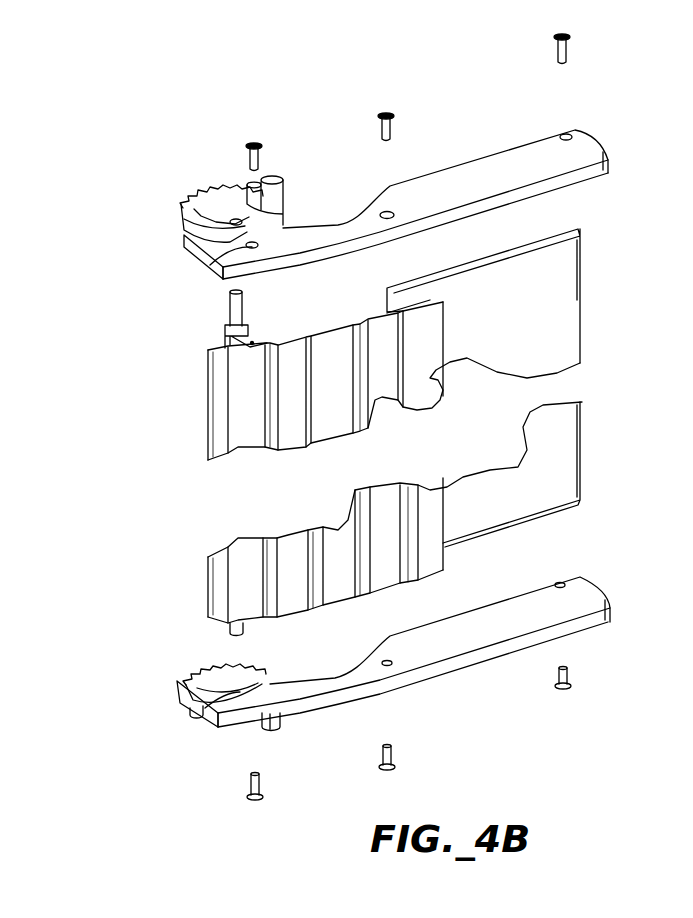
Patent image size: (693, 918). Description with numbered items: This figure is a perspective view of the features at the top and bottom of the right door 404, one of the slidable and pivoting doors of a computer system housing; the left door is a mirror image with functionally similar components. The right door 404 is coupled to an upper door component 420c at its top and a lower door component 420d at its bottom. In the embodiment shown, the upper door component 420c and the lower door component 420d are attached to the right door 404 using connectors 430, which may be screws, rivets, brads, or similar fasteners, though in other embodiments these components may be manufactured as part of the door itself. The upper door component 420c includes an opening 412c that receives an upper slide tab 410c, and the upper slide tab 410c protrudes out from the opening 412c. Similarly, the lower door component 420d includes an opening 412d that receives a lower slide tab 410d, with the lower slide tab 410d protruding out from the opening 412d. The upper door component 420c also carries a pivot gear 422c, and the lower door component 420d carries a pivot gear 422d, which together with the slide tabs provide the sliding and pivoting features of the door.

The right door 404 is at (583, 325).
The upper slide tab 410c is at (226, 317).
The lower slide tab 410d is at (228, 628).
The opening 412c is at (221, 271).
The opening 412d is at (217, 715).
The upper door component 420c is at (573, 180).
The lower door component 420d is at (577, 604).
The pivot gear 422c is at (182, 210).
The pivot gear 422d is at (177, 683).
The connectors 430 is at (555, 52).